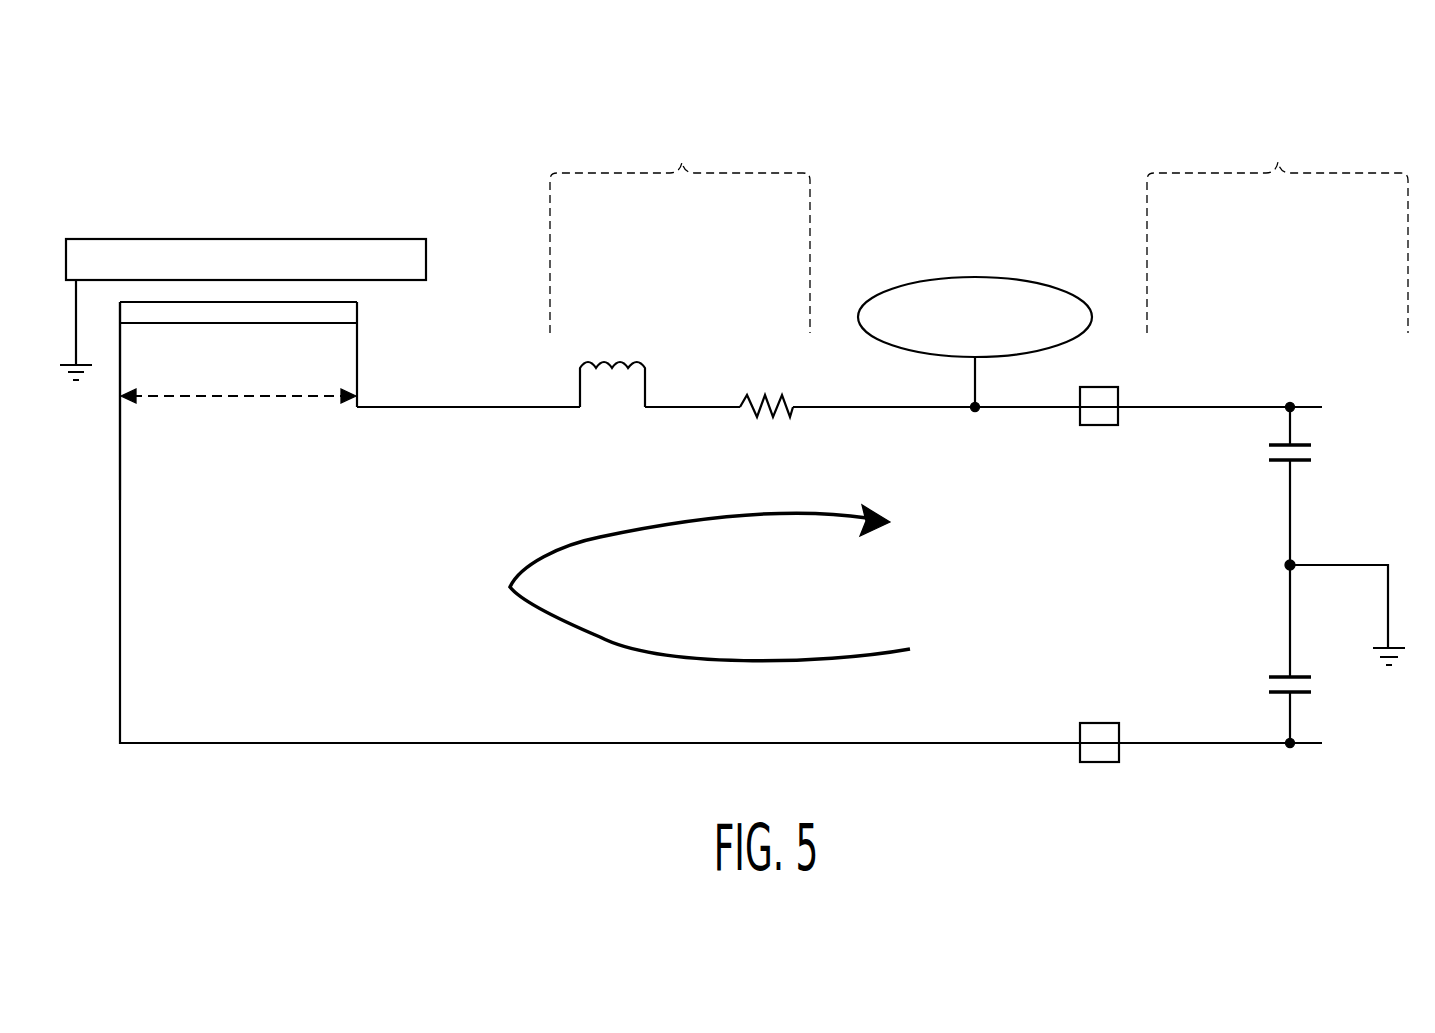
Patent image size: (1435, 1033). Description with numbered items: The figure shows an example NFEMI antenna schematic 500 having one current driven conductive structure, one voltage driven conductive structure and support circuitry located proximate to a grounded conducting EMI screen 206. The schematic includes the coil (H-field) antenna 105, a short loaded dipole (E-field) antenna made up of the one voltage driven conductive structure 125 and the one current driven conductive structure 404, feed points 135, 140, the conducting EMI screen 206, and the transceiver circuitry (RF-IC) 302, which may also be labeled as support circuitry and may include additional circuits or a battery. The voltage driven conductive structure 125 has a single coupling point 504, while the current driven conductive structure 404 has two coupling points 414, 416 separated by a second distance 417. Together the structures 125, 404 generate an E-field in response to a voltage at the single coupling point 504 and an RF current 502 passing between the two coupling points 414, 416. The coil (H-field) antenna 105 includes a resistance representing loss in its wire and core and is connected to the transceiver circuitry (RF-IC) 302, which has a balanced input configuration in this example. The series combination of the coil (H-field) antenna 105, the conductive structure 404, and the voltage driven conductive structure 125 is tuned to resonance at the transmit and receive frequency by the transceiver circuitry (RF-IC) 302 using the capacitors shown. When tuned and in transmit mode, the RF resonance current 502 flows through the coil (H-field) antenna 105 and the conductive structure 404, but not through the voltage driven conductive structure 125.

The NFEMI antenna schematic 500 is at (142, 132).
The conducting EMI screen 206 is at (335, 239).
The current driven conductive structure 404 is at (170, 323).
The first coupling point 414 is at (120, 410).
The second coupling point 416 is at (360, 405).
The second distance 417 is at (285, 397).
The coil (H-field) antenna 105 is at (680, 271).
The voltage driven conductive structure 125 is at (997, 277).
The single coupling point 504 is at (975, 412).
The feed point 135 is at (1099, 425).
The feed point 140 is at (1090, 723).
The transceiver circuitry (RF-IC) 302 is at (1277, 437).
The RF resonance current 502 is at (512, 587).